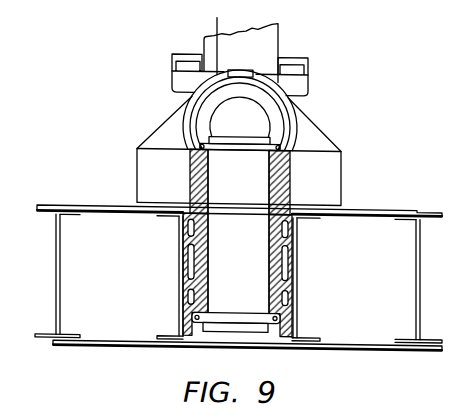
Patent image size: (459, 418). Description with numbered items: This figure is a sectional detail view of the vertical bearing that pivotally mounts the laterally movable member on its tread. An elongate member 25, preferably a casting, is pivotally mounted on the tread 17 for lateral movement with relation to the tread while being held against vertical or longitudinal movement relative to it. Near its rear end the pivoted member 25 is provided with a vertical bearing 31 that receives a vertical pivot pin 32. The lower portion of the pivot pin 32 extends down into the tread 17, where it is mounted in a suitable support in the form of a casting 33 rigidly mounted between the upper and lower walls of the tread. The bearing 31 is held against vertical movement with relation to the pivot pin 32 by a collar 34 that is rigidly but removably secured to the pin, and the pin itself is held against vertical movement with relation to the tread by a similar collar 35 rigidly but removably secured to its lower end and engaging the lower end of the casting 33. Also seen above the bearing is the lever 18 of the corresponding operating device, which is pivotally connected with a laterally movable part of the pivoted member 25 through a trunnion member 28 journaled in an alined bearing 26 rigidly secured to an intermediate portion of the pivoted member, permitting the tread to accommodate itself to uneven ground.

The tread 17 is at (380, 208).
The lever 18 is at (268, 38).
The elongate member 25 is at (150, 174).
The bearing 26 is at (201, 41).
The trunnion member 28 is at (257, 113).
The vertical bearing 31 is at (287, 164).
The vertical pivot pin 32 is at (262, 199).
The casting 33 is at (277, 262).
The collar 34 is at (229, 146).
The collar 35 is at (260, 320).